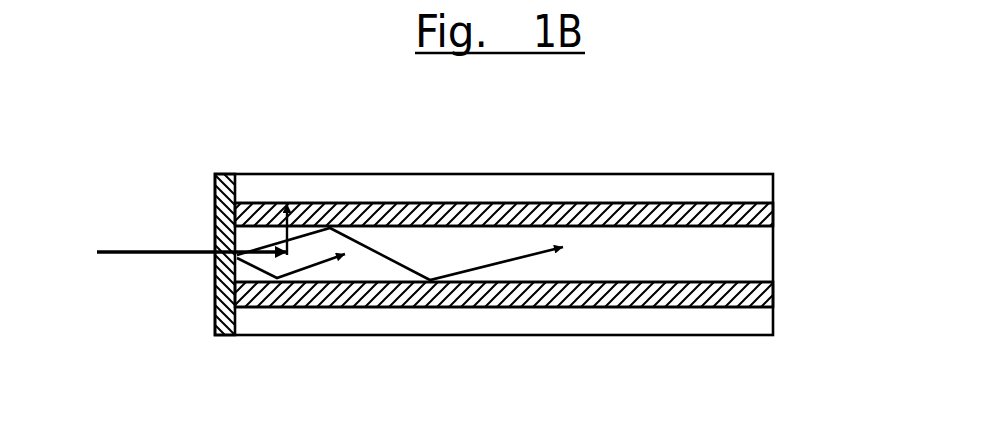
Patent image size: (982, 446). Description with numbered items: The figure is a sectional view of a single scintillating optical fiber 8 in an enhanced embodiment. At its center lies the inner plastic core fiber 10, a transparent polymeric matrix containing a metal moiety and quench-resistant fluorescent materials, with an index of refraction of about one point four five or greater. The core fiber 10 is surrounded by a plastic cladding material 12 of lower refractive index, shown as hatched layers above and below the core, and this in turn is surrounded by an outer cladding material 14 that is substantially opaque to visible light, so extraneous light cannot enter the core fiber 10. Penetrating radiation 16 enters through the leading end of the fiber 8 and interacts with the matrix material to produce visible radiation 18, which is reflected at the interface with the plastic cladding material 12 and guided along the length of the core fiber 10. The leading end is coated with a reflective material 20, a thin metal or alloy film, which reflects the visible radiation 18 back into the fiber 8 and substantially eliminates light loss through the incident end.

The scintillating optical fiber 8 is at (494, 281).
The inner plastic core fiber 10 is at (548, 254).
The plastic cladding material 12 is at (548, 217).
The outer cladding material 14 is at (531, 248).
The penetrating radiation 16 is at (179, 201).
The visible radiation 18 is at (400, 184).
The reflective material 20 is at (184, 276).